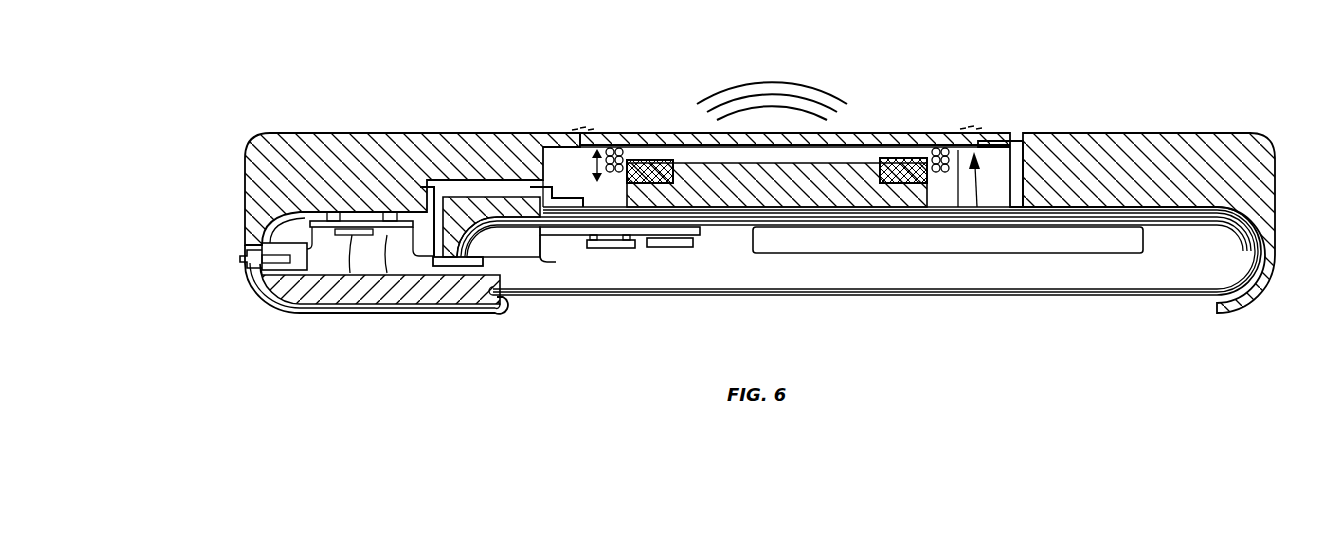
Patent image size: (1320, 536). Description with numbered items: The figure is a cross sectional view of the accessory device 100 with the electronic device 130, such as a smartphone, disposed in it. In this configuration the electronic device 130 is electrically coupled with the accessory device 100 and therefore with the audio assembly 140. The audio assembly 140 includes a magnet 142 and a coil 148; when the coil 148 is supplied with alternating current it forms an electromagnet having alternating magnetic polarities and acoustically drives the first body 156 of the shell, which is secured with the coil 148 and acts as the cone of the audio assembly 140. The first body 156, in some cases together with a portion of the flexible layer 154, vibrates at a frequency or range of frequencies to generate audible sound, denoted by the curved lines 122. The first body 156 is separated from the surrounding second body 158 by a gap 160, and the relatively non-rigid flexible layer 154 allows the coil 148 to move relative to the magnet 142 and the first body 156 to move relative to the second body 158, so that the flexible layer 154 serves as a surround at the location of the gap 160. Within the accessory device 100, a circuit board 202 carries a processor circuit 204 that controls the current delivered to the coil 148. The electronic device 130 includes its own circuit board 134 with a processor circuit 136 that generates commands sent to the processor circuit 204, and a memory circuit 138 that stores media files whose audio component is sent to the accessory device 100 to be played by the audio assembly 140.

The accessory device 100 is at (1180, 96).
The curved lines 122 is at (858, 80).
The electronic device 130 is at (1078, 308).
The circuit board 134 is at (573, 238).
The processor circuit 136 is at (605, 250).
The memory circuit 138 is at (660, 250).
The audio assembly 140 is at (626, 108).
The magnet 142 is at (903, 142).
The coil 148 is at (942, 174).
The flexible layer 154 is at (1005, 140).
The first body 156 is at (960, 207).
The second body 158 is at (1078, 140).
The gap 160 is at (980, 178).
The circuit board 202 is at (410, 316).
The processor circuit 204 is at (357, 316).